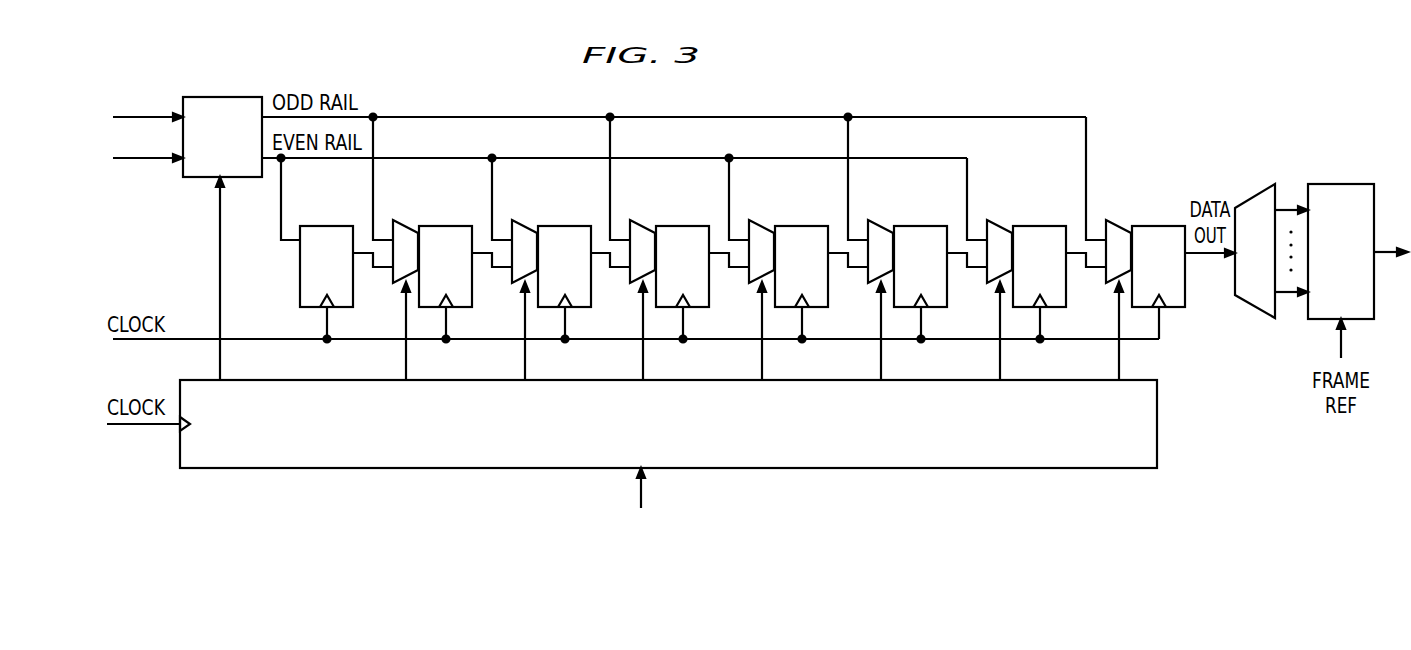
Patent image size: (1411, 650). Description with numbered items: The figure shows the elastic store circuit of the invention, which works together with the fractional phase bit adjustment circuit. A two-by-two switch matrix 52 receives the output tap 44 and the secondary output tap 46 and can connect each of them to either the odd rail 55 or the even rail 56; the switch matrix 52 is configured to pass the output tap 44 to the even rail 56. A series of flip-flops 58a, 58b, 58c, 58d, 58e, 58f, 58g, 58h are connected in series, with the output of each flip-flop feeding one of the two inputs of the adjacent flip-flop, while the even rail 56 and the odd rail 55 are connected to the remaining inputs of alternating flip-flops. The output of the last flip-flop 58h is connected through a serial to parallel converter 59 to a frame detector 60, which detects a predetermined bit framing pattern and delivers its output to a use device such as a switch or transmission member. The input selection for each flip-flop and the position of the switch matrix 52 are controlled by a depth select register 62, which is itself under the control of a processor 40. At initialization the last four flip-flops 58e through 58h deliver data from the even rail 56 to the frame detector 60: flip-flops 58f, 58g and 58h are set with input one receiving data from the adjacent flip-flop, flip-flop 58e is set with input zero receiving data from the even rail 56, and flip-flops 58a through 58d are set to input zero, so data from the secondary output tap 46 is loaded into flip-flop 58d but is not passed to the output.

The processor 40 is at (641, 532).
The output tap 44 is at (142, 163).
The secondary output tap 46 is at (147, 114).
The 2×2 switch matrix 52 is at (225, 99).
The odd rail 55 is at (400, 116).
The even rail 56 is at (400, 157).
The flip-flop 58a is at (331, 226).
The flip-flop 58b is at (450, 226).
The flip-flop 58c is at (569, 226).
The flip-flop 58d is at (687, 226).
The flip-flop 58e is at (806, 226).
The flip-flop 58f is at (925, 226).
The flip-flop 58g is at (1044, 226).
The flip-flop 58h is at (1163, 226).
The serial to parallel converter 59 is at (1258, 197).
The frame detector 60 is at (1344, 184).
The depth select register 62 is at (512, 467).